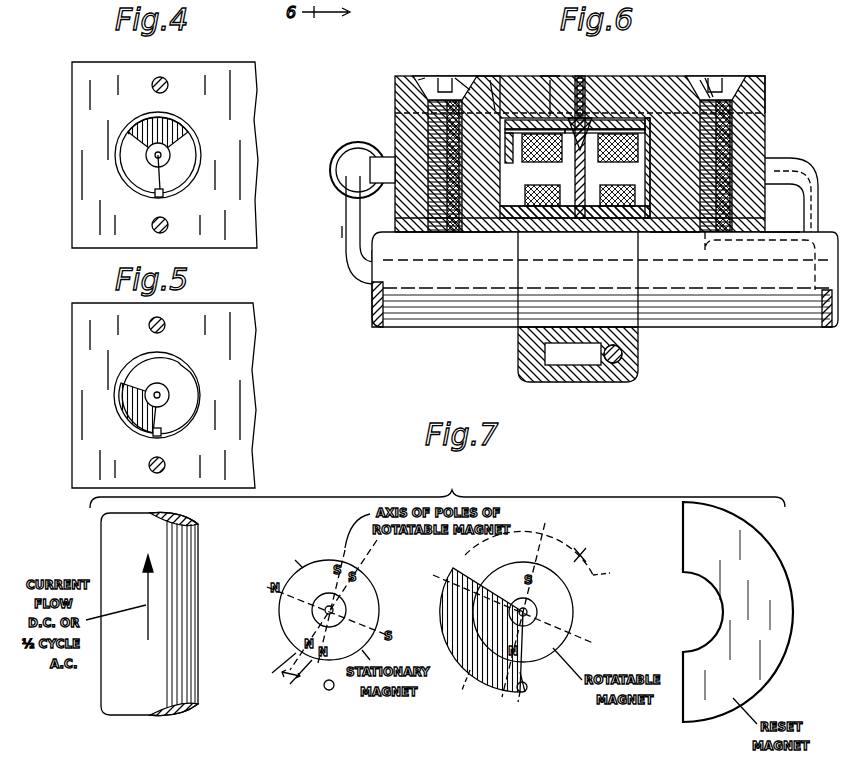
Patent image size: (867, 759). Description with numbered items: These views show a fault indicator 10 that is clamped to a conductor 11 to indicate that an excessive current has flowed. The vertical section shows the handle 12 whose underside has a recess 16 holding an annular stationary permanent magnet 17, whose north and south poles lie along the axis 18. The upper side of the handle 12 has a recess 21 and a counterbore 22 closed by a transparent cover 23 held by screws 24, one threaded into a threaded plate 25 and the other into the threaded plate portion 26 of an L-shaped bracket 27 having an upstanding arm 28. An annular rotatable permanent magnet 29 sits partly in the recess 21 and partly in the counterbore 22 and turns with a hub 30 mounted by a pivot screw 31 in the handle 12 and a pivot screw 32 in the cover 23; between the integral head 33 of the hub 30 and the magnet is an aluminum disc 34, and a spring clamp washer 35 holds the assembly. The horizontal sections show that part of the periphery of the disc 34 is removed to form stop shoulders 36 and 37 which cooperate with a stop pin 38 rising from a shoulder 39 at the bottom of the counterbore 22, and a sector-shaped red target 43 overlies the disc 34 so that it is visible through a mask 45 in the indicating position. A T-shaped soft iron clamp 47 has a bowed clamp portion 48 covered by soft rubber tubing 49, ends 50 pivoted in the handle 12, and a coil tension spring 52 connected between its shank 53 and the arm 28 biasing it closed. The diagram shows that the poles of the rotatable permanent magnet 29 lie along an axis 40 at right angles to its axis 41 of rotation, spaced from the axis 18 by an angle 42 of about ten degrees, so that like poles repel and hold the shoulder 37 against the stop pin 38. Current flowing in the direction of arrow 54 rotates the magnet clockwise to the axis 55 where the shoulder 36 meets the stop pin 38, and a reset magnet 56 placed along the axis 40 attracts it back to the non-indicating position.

In FIG. 6, the fault indicator 10 is at (383, 80).
In FIG. 6, the conductor 11 is at (438, 327).
In FIG. 7, the conductor 11 is at (190, 540).
In FIG. 4, the handle 12 is at (252, 87).
In FIG. 5, the handle 12 is at (250, 345).
In FIG. 6, the handle 12 is at (765, 122).
In FIG. 6, the recess 16 is at (640, 236).
In FIG. 6, the stationary permanent magnet 17 is at (520, 236).
In FIG. 7, the stationary permanent magnet 17 is at (329, 598).
In FIG. 7, the axis of poles of stationary magnet 18 is at (372, 548).
In FIG. 4, the recess 21 is at (120, 163).
In FIG. 5, the recess 21 is at (192, 403).
In FIG. 6, the recess 21 is at (662, 165).
In FIG. 4, the counterbore 22 is at (118, 147).
In FIG. 5, the counterbore 22 is at (198, 383).
In FIG. 6, the counterbore 22 is at (665, 118).
In FIG. 6, the cover 23 is at (762, 82).
In FIG. 4, the screws 24 is at (180, 225).
In FIG. 5, the screws 24 is at (178, 465).
In FIG. 6, the screws 24 is at (422, 118).
In FIG. 6, the threaded plate 25 is at (745, 232).
In FIG. 6, the threaded plate portion 26 is at (430, 246).
In FIG. 6, the L-shaped bracket 27 is at (360, 268).
In FIG. 6, the upstanding arm 28 is at (346, 208).
In FIG. 6, the rotatable permanent magnet 29 is at (612, 126).
In FIG. 7, the rotatable permanent magnet 29 is at (566, 608).
In FIG. 6, the hub 30 is at (537, 170).
In FIG. 7, the hub 30 is at (483, 691).
In FIG. 6, the pivot screw 31 is at (582, 232).
In FIG. 6, the pivot screw 32 is at (566, 80).
In FIG. 6, the integral head 33 is at (598, 120).
In FIG. 4, the disc 34 is at (190, 147).
In FIG. 5, the disc 34 is at (135, 378).
In FIG. 6, the disc 34 is at (640, 131).
In FIG. 6, the spring clamp washer 35 is at (618, 170).
In FIG. 4, the stop shoulder 36 is at (175, 185).
In FIG. 5, the stop shoulder 36 is at (184, 368).
In FIG. 7, the stop shoulder 36 is at (613, 570).
In FIG. 4, the stop shoulder 37 is at (128, 133).
In FIG. 5, the stop shoulder 37 is at (168, 433).
In FIG. 7, the stop shoulder 37 is at (530, 675).
In FIG. 4, the stop pin 38 is at (155, 197).
In FIG. 5, the stop pin 38 is at (161, 436).
In FIG. 6, the stop pin 38 is at (512, 124).
In FIG. 7, the stop pin 38 is at (324, 688).
In FIG. 6, the shoulder 39 is at (492, 82).
In FIG. 7, the axis of poles of rotatable magnet 40 is at (345, 550).
In FIG. 7, the axis of rotation 41 is at (537, 607).
In FIG. 7, the angle 42 is at (286, 688).
In FIG. 4, the target 43 is at (175, 130).
In FIG. 5, the target 43 is at (128, 428).
In FIG. 7, the target 43 is at (452, 613).
In FIG. 6, the mask 45 is at (706, 92).
In FIG. 6, the clamp 47 is at (752, 320).
In FIG. 6, the clamp portion 48 is at (595, 382).
In FIG. 6, the soft rubber tubing 49 is at (638, 352).
In FIG. 6, the ends of clamp 50 is at (382, 157).
In FIG. 6, the coil tension spring 52 is at (345, 146).
In FIG. 6, the shank 53 is at (346, 226).
In FIG. 7, the arrow 54 is at (140, 595).
In FIG. 7, the indicating position axis 55 is at (264, 574).
In FIG. 7, the reset magnet 56 is at (780, 577).